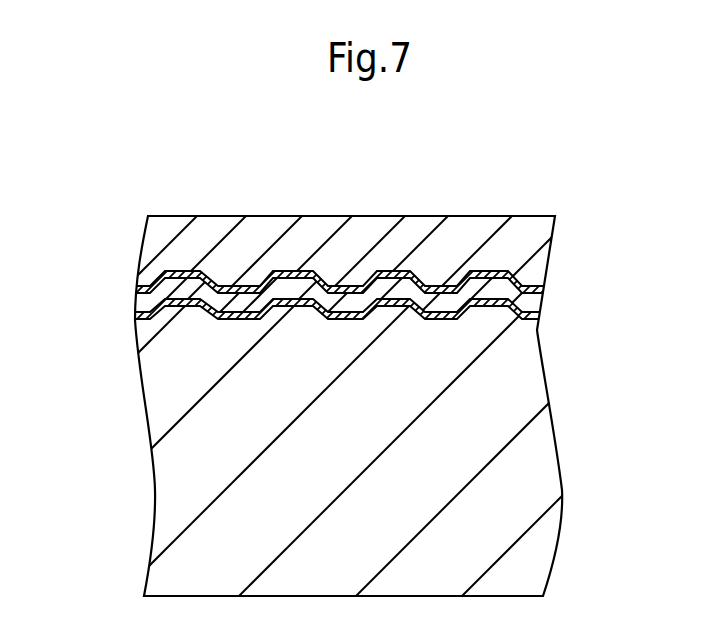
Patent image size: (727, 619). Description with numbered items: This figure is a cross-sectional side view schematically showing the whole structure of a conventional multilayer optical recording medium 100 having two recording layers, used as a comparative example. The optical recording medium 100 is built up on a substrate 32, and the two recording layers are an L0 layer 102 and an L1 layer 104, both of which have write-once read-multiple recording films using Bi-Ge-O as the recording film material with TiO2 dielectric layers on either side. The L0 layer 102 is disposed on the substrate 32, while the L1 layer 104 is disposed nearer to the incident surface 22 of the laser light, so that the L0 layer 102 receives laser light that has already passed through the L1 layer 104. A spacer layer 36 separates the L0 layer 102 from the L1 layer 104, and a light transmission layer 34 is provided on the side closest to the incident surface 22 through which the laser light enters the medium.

The optical recording medium 100 is at (513, 184).
The incident surface 22 is at (187, 216).
The light transmission layer 34 is at (535, 243).
The L1 layer 104 is at (536, 283).
The L0 layer 102 is at (530, 312).
The spacer layer 36 is at (140, 302).
The substrate 32 is at (548, 458).